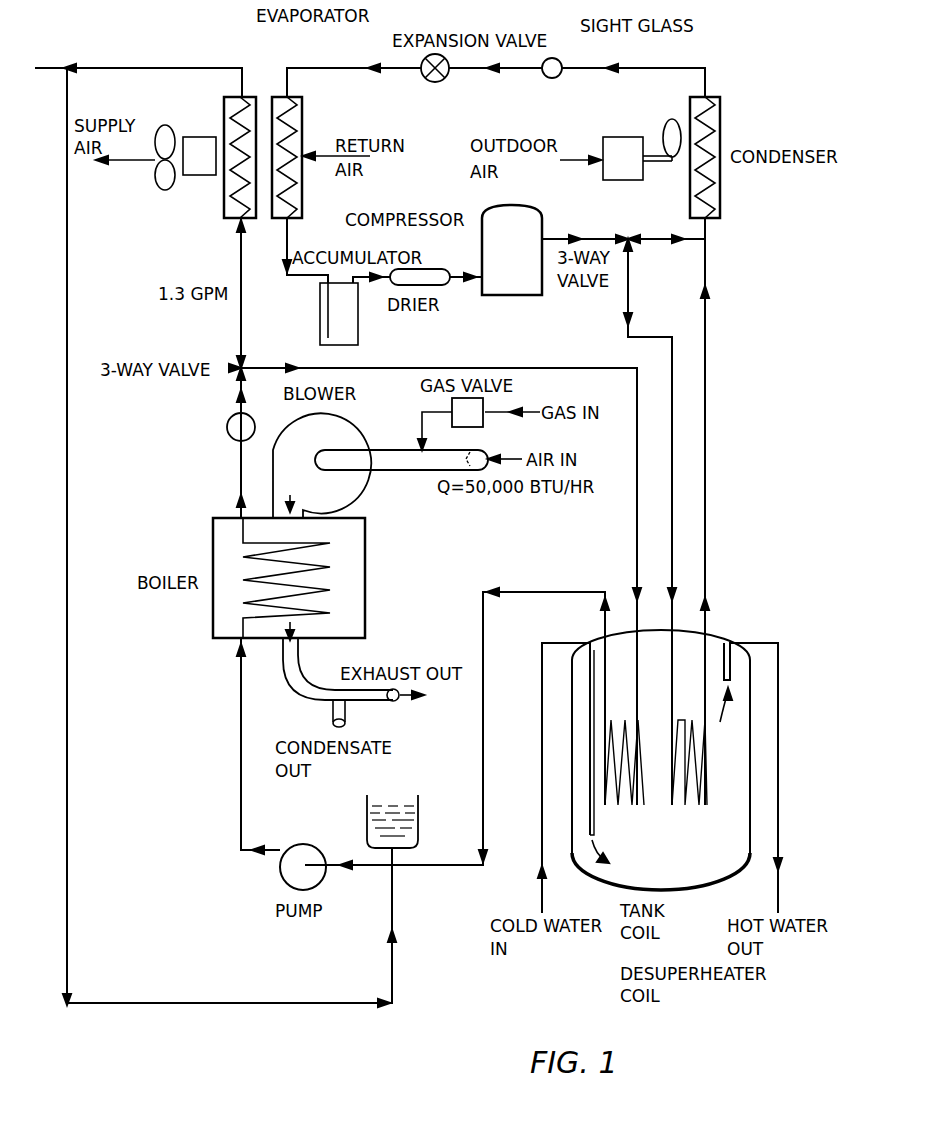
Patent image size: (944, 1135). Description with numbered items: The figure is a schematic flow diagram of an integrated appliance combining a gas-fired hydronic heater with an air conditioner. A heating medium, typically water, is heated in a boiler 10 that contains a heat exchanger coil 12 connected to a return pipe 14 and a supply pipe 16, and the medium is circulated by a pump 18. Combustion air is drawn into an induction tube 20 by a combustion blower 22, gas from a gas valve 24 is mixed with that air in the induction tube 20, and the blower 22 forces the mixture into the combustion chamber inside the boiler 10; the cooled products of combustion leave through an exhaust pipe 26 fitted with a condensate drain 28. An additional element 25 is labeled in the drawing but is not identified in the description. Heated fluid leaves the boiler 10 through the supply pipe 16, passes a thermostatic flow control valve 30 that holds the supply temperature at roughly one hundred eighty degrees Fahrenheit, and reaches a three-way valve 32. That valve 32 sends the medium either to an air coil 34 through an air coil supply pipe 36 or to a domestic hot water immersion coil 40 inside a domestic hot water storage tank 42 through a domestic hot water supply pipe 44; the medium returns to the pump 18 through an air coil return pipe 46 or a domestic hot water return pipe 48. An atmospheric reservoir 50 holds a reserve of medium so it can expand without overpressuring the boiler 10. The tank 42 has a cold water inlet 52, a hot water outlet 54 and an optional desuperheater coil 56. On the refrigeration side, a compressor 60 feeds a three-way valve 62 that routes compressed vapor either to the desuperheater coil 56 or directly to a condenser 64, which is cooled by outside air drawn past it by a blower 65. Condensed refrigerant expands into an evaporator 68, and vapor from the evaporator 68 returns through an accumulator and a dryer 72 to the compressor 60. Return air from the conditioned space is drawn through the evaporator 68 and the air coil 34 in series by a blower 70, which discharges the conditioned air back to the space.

The boiler 10 is at (213, 538).
The heat exchanger coil 12 is at (302, 578).
The return pipe 14 is at (240, 684).
The supply pipe 16 is at (238, 455).
The pump 18 is at (282, 872).
The induction tube 20 is at (401, 480).
The combustion blower 22 is at (286, 428).
The gas valve 24 is at (495, 446).
The gas valve 25 is at (420, 428).
The exhaust pipe 26 is at (300, 690).
The condensate drain 28 is at (348, 714).
The thermostatic flow control valve 30 is at (230, 418).
The three-way valve 32 is at (238, 362).
The air coil 34 is at (228, 192).
The air coil supply pipe 36 is at (236, 240).
The domestic hot water immersion coil 40 is at (643, 735).
The domestic hot water storage tank 42 is at (716, 640).
The domestic hot water supply pipe 44 is at (636, 505).
The air coil return pipe 46 is at (70, 256).
The domestic hot water return pipe 48 is at (483, 782).
The atmospheric reservoir 50 is at (367, 813).
The cold water inlet 52 is at (542, 728).
The hot water outlet 54 is at (785, 745).
The desuperheater coil 56 is at (706, 790).
The compressor 60 is at (431, 84).
The three-way valve 62 is at (628, 237).
The condenser 64 is at (720, 120).
The blower 65 is at (672, 119).
The evaporator 68 is at (302, 125).
The blower 70 is at (200, 137).
The dryer 72 is at (444, 270).